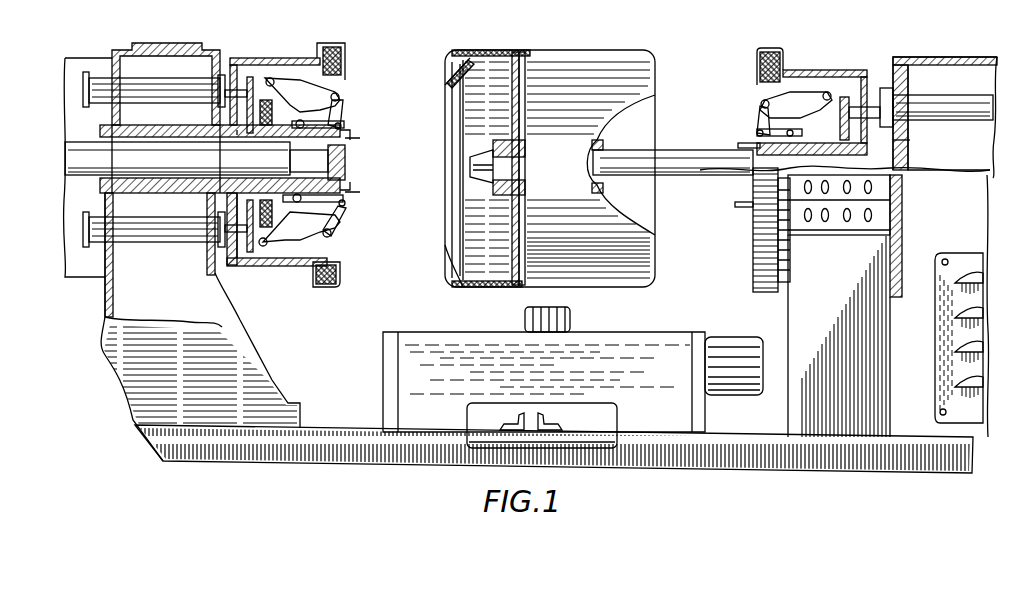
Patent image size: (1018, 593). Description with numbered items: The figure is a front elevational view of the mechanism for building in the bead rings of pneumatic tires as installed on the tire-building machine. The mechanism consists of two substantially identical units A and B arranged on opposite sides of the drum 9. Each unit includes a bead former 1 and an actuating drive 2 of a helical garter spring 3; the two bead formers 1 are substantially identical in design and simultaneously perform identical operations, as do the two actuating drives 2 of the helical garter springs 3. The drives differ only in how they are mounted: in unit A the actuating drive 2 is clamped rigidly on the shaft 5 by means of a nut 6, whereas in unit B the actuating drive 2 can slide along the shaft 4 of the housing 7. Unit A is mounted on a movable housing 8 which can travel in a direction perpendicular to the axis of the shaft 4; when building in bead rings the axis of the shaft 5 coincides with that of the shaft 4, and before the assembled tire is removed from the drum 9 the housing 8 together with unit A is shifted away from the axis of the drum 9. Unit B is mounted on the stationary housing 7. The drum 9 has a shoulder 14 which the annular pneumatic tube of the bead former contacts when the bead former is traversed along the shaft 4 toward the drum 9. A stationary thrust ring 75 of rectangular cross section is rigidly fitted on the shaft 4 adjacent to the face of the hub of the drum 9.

The bead former 1 is at (310, 58).
The actuating drive 2 is at (250, 267).
The helical garter spring 3 is at (343, 93).
The shaft 4 is at (679, 153).
The shaft 5 is at (85, 150).
The nut 6 is at (340, 182).
The stationary housing 7 is at (915, 57).
The movable housing 8 is at (124, 50).
The drum 9 is at (563, 60).
The shoulder 14 is at (475, 48).
The stationary thrust ring 75 is at (606, 144).
The unit A is at (290, 58).
The unit B is at (813, 70).